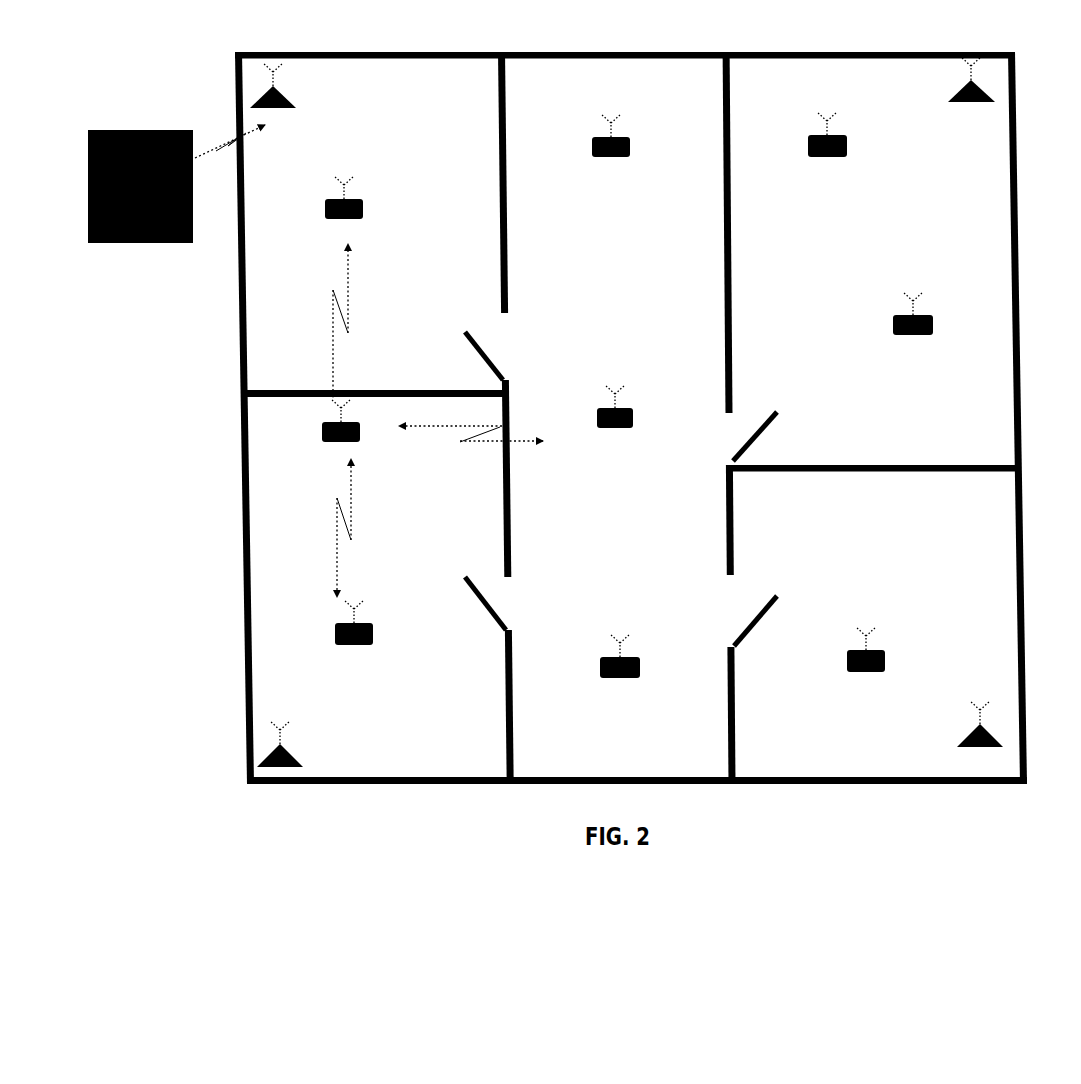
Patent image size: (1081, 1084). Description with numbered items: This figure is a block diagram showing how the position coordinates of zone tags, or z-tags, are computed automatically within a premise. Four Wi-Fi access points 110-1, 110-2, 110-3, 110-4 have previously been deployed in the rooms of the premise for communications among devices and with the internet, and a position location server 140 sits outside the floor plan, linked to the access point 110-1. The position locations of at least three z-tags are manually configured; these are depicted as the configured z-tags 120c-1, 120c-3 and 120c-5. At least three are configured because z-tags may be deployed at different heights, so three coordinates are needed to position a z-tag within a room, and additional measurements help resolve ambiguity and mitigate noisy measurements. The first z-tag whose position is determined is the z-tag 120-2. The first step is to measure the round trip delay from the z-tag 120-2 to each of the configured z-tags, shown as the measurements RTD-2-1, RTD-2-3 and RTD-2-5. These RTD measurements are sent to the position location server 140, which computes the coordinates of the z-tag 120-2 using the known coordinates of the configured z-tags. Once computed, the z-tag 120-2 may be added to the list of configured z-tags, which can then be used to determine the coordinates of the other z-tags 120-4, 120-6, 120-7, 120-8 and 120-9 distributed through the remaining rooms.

The position location server 140 is at (168, 128).
The access point 110-1 is at (256, 96).
The access point 110-2 is at (952, 88).
The access point 110-3 is at (264, 762).
The access point 110-4 is at (1068, 712).
The configured z-tag 120c-1 is at (327, 205).
The z-tag 120-2 is at (324, 432).
The configured z-tag 120c-3 is at (337, 640).
The z-tag 120-4 is at (594, 150).
The configured z-tag 120c-5 is at (599, 415).
The z-tag 120-6 is at (602, 668).
The z-tag 120-7 is at (810, 148).
The z-tag 120-8 is at (895, 326).
The z-tag 120-9 is at (849, 661).
The round trip delay between stations 120-2 and 120c-1 RTD-2-1 is at (359, 320).
The round trip delay between stations 120-2 and 120c-3 RTD-2-3 is at (361, 528).
The round trip delay between stations 120-2 and 120c-5 RTD-2-5 is at (471, 451).